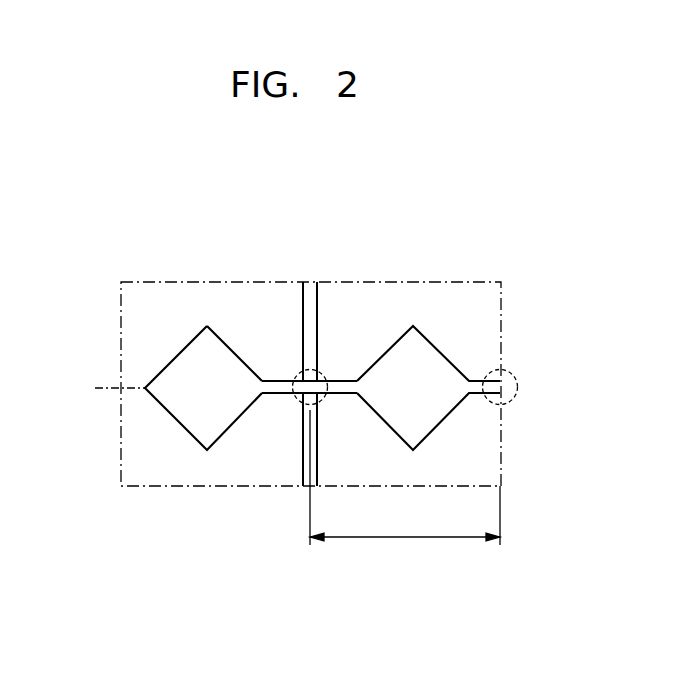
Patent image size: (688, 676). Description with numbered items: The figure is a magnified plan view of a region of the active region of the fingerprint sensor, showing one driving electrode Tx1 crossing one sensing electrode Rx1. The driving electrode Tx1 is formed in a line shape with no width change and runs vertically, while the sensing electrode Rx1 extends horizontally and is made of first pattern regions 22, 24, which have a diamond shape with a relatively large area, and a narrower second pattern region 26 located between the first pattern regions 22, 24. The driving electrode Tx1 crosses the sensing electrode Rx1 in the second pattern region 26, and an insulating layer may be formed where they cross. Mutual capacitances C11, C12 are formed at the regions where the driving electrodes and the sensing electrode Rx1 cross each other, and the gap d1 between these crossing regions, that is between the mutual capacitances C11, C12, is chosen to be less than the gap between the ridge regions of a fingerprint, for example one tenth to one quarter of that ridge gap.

The first pattern region 22 is at (207, 326).
The first pattern region 24 is at (413, 326).
The second pattern region 26 is at (333, 390).
The driving electrode Tx1 is at (309, 368).
The sensing electrode Rx1 is at (100, 385).
The mutual capacitance C11 is at (295, 378).
The mutual capacitance C12 is at (513, 374).
The gap d1 is at (405, 477).